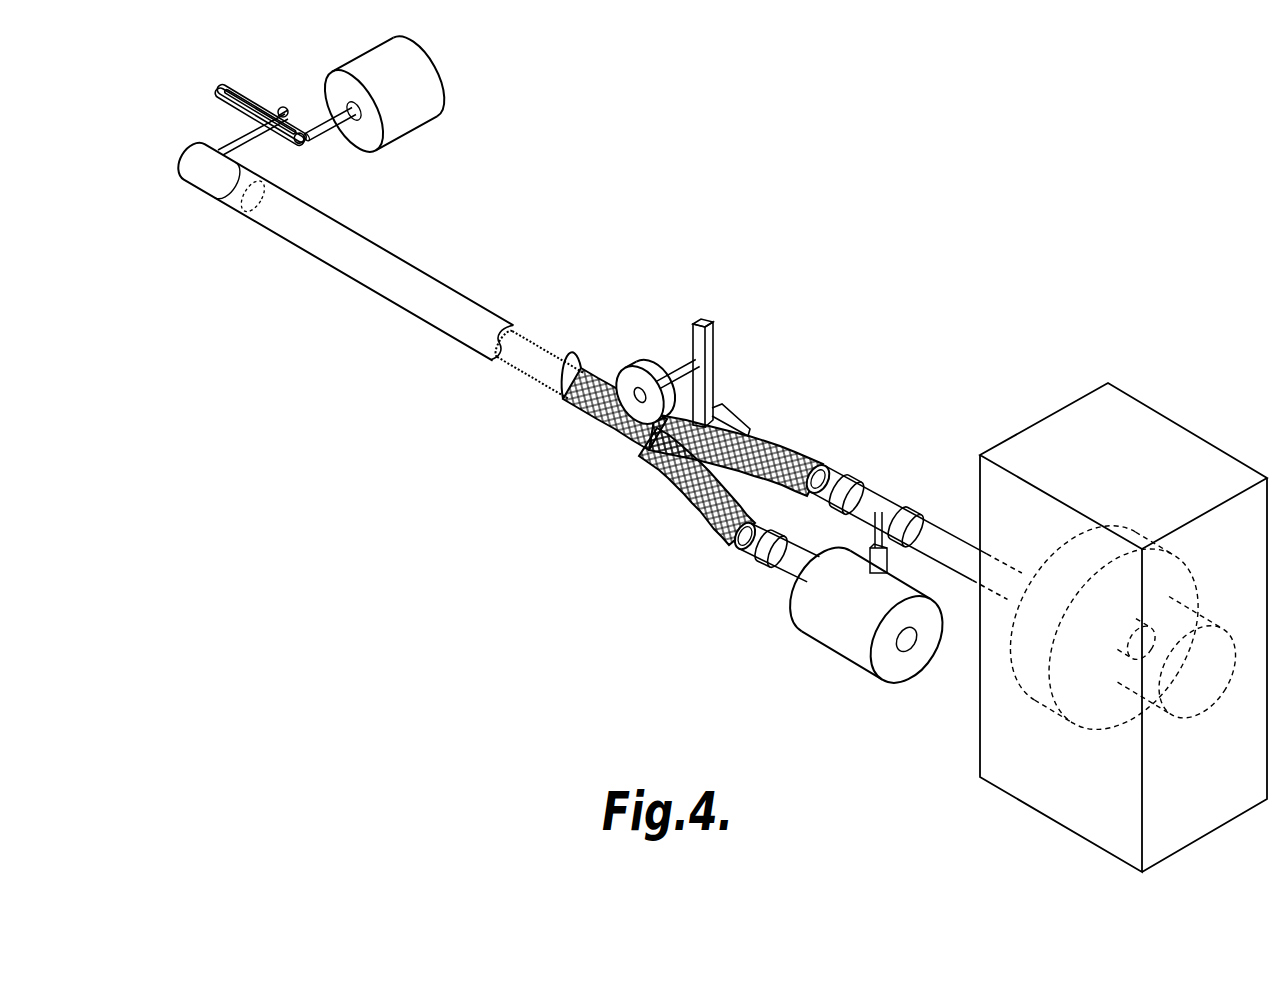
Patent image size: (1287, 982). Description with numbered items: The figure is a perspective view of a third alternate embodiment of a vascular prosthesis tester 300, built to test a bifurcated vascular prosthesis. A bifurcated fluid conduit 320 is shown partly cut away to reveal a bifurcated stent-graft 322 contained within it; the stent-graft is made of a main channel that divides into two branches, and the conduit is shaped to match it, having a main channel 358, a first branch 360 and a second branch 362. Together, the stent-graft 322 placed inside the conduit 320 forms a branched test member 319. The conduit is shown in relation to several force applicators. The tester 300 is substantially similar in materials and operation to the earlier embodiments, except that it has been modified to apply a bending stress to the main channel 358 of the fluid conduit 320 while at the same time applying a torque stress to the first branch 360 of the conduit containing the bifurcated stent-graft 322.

The vascular prosthesis tester 300 is at (961, 181).
The fluid conduit 320 is at (247, 220).
The main channel 358 is at (455, 343).
The bifurcated stent-graft 322 is at (584, 414).
The branched test member 319 is at (622, 436).
The second branch 362 is at (797, 455).
The first branch 360 is at (727, 556).